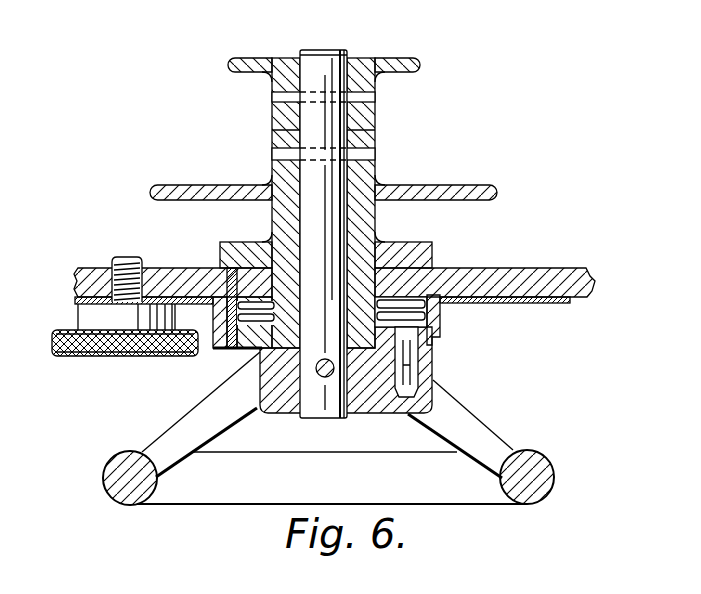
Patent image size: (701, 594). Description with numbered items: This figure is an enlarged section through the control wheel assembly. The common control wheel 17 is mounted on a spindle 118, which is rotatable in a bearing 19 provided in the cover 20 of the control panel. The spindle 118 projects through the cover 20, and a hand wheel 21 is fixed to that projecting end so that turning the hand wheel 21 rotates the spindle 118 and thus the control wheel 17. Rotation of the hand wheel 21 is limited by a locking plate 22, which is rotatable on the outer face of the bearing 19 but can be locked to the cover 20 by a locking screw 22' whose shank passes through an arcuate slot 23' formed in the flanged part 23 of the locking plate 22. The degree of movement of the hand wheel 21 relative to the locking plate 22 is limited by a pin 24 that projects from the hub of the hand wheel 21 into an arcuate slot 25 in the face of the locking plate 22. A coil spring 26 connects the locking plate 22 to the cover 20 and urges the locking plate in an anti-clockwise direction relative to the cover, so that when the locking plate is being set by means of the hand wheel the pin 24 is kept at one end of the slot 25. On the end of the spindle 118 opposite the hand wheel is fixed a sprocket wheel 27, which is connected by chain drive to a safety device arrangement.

The spindle 118 is at (322, 73).
The sprocket wheel 27 is at (385, 65).
The common control wheel 17 is at (220, 185).
The bearing 19 is at (390, 250).
The cover 20 is at (455, 280).
The flanged part 23 is at (104, 264).
The arcuate slot 23' is at (114, 313).
The locking screw 22' is at (125, 361).
The coil spring 26 is at (253, 350).
The locking plate 22 is at (492, 320).
The arcuate slot 25 is at (440, 340).
The pin 24 is at (403, 365).
The hand wheel 21 is at (482, 435).